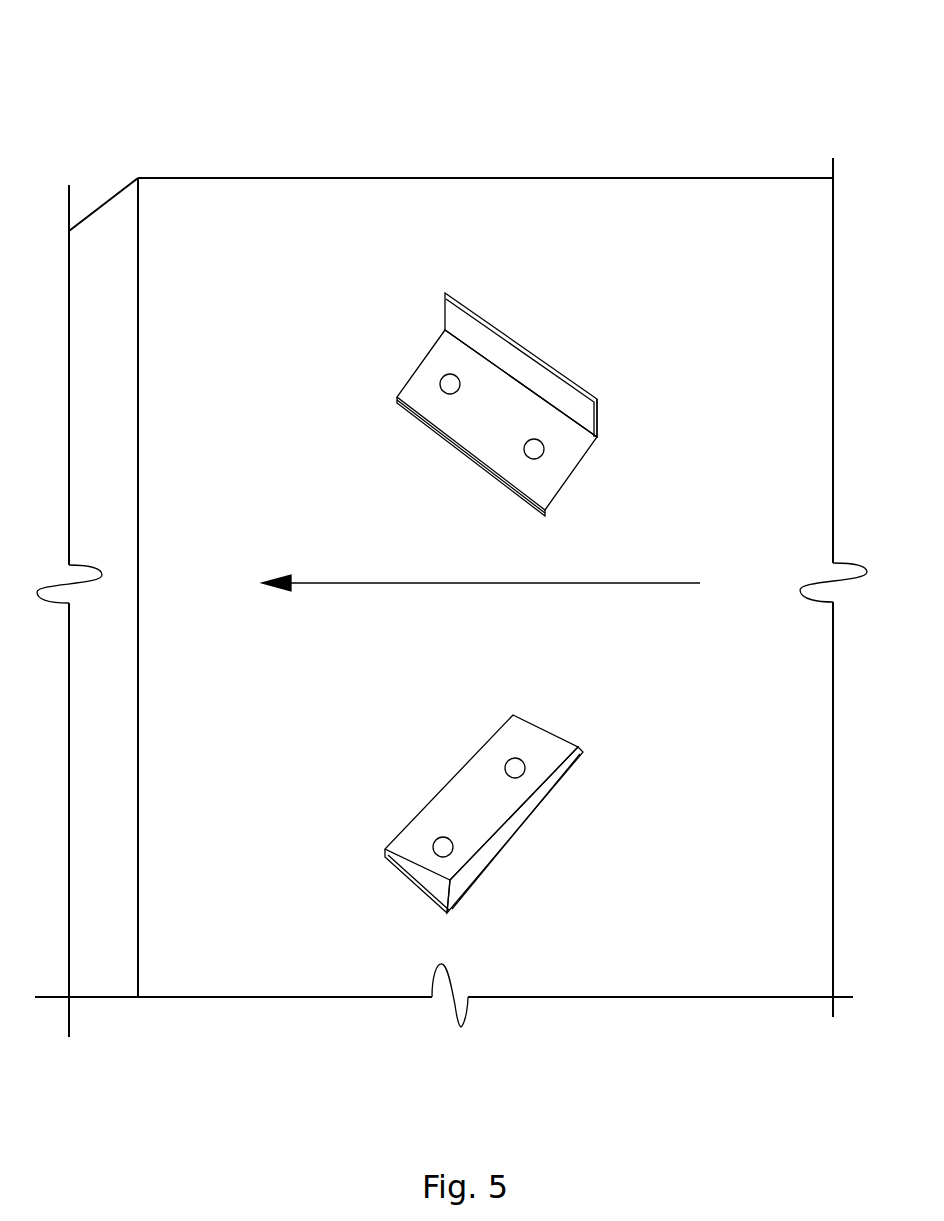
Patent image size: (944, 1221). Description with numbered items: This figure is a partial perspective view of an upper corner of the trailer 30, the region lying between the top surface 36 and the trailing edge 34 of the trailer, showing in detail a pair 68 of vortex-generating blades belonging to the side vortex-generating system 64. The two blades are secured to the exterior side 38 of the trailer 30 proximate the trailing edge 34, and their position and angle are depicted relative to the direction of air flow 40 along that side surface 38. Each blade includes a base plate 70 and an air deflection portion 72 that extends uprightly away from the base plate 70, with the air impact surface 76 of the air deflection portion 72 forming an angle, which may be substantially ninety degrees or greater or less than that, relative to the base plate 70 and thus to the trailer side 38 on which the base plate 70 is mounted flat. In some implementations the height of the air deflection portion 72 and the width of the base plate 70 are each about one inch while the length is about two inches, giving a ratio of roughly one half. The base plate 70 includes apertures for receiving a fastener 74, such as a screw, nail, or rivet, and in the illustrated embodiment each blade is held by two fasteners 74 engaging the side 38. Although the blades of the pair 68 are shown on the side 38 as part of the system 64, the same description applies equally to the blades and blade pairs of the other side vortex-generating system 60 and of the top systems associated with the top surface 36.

The trailer 30 is at (668, 150).
The trailing edge 34 is at (119, 488).
The top surface 36 is at (303, 178).
The exterior side 38 is at (604, 650).
The direction of air flow 40 is at (347, 583).
The side vortex-generating system 60 is at (484, 700).
The vortex-generating system 64 is at (522, 640).
The pair of vortex-generating blades 68 is at (604, 830).
The base plate 70 is at (460, 428).
The air deflection portion 72 is at (444, 322).
The fastener 74 is at (440, 384).
The air impact surface 76 is at (590, 388).